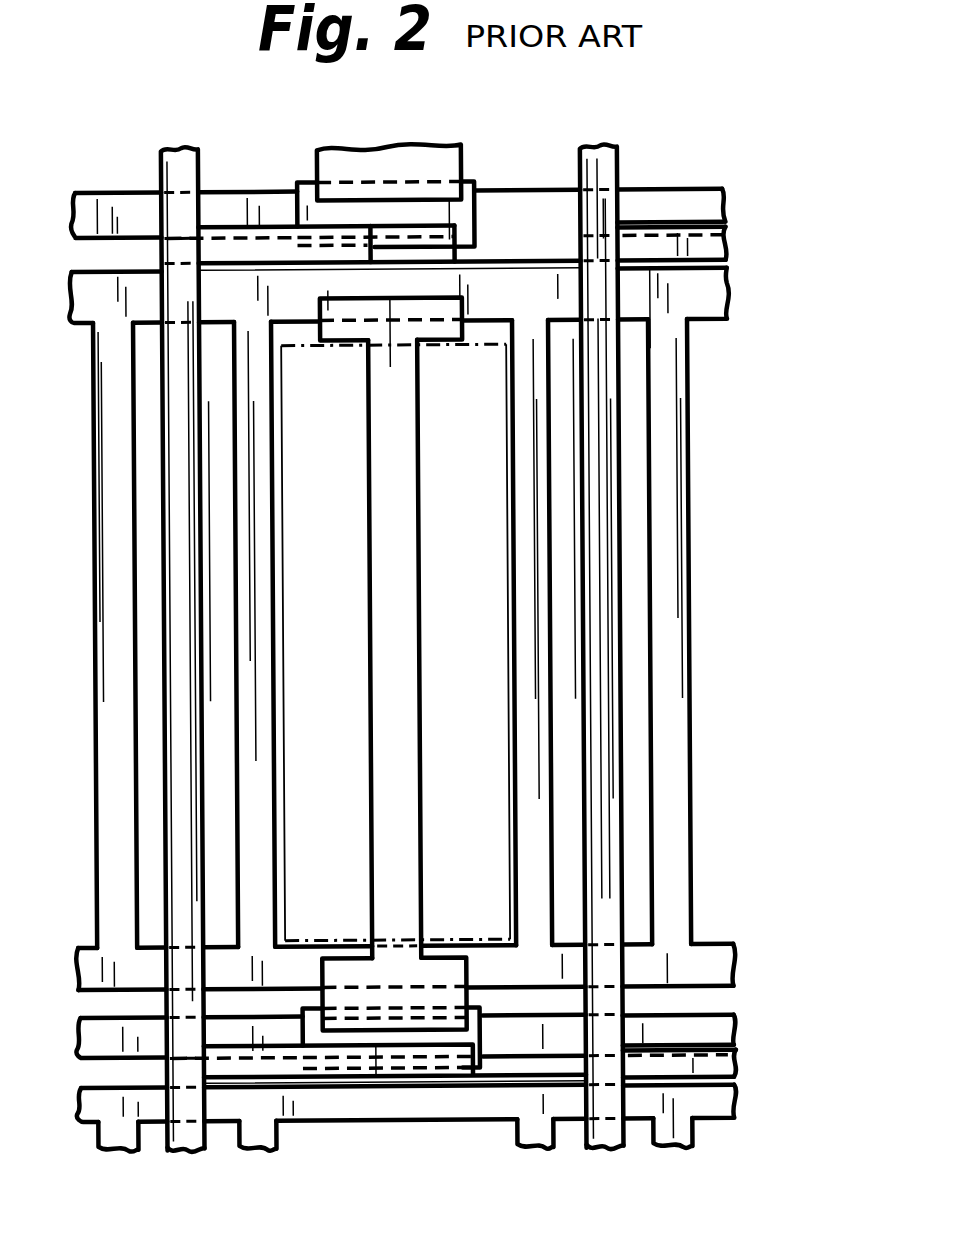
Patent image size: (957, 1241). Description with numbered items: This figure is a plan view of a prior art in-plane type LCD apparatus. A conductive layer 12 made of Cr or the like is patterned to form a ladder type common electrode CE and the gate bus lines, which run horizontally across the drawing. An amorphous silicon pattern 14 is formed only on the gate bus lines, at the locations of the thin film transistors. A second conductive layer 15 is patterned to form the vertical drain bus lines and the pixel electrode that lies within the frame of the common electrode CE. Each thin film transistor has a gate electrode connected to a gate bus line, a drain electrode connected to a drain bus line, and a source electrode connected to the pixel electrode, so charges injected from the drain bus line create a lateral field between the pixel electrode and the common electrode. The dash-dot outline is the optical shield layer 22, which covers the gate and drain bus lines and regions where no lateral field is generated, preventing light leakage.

The conductive layer 12 is at (704, 209).
The amorphous silicon pattern 14 is at (308, 200).
The conductive layer 15 is at (420, 527).
The optical shield layer 22 is at (284, 709).